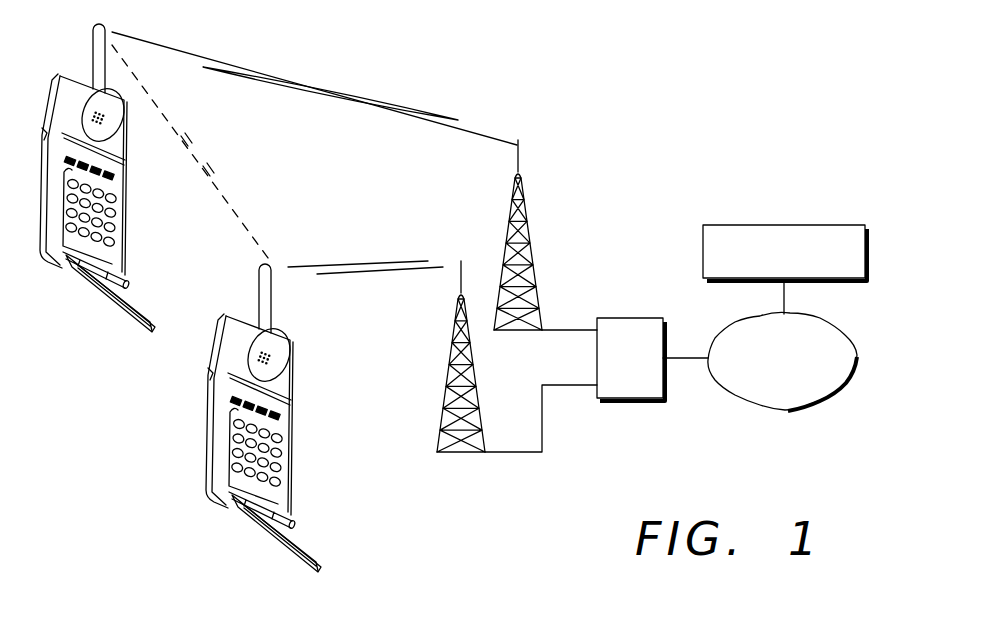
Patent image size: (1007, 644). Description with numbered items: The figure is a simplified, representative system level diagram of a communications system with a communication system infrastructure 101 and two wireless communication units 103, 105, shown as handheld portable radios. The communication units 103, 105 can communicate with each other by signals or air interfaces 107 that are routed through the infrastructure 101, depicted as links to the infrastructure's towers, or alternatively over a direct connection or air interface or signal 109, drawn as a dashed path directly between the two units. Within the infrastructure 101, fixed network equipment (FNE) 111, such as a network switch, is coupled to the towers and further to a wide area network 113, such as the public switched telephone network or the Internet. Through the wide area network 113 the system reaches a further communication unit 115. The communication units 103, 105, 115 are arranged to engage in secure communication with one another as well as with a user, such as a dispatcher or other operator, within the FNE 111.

The communication system infrastructure 101 is at (558, 172).
The communication unit 103 is at (121, 223).
The communication unit 105 is at (291, 444).
The signals or air interfaces 107 is at (336, 100).
The direct connection or air interface or signal 109 is at (193, 153).
The fixed network equipment (FNE) 111 is at (621, 402).
The wide area network 113 is at (803, 410).
The communication unit 115 is at (812, 224).